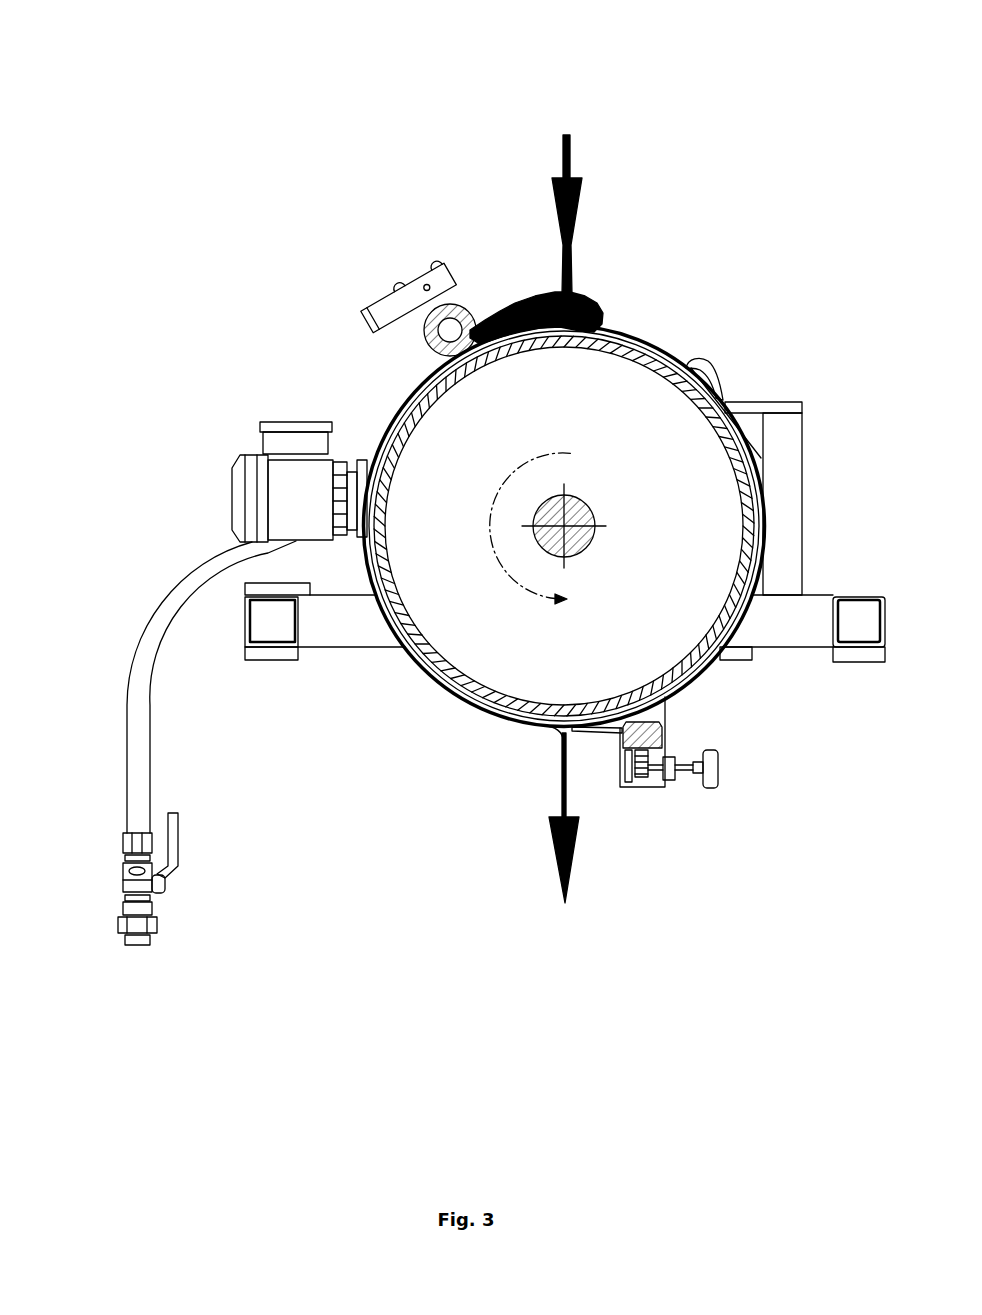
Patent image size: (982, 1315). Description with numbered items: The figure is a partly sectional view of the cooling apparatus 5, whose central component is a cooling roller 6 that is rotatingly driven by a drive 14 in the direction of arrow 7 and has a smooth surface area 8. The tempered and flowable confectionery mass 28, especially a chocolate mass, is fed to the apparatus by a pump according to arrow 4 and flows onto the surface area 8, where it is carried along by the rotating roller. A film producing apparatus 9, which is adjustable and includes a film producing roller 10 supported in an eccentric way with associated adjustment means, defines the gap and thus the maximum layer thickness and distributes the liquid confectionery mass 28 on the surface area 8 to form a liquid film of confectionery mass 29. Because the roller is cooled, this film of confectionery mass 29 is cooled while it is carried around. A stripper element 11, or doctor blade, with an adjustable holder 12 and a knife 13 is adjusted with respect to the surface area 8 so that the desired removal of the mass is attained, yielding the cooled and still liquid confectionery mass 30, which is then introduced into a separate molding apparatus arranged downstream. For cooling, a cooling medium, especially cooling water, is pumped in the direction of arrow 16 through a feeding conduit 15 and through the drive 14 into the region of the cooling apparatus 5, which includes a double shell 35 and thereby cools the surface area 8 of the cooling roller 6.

The arrow 4 is at (570, 155).
The cooling apparatus 5 is at (420, 200).
The cooling roller 6 is at (555, 437).
The arrow 7 is at (650, 344).
The surface area 8 is at (763, 503).
The film producing apparatus 9 is at (379, 294).
The film producing roller 10 is at (475, 306).
The stripper element 11 is at (608, 748).
The adjustable holder 12 is at (683, 778).
The knife 13 is at (590, 733).
The drive 14 is at (249, 455).
The feeding conduit 15 is at (160, 630).
The arrow 16 is at (724, 402).
The confectionery mass 28 is at (537, 293).
The film of confectionery mass 29 is at (392, 427).
The cooled confectionery mass 30 is at (563, 783).
The double shell 35 is at (438, 680).